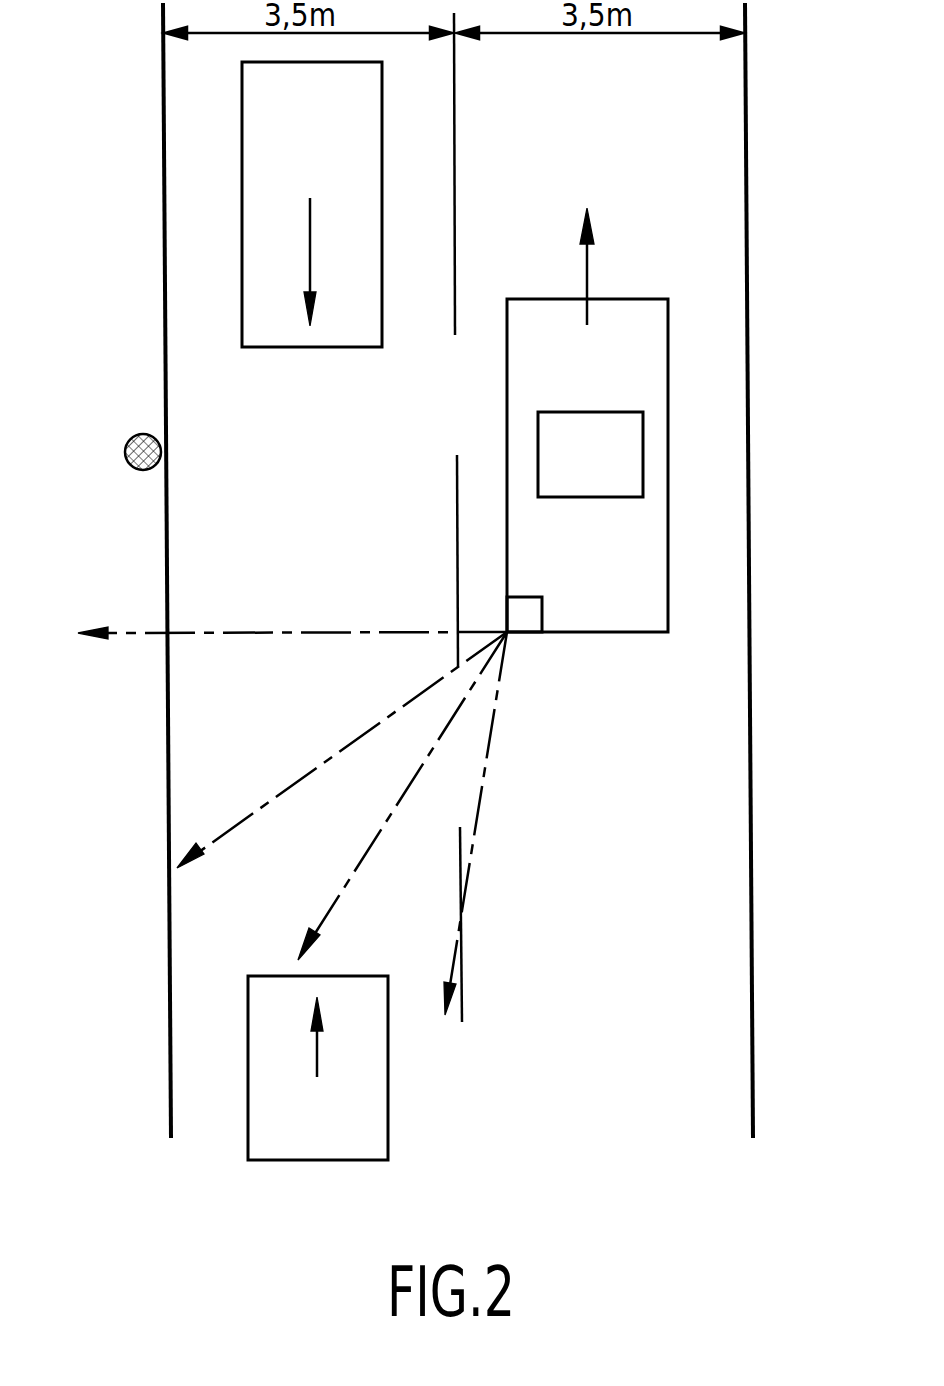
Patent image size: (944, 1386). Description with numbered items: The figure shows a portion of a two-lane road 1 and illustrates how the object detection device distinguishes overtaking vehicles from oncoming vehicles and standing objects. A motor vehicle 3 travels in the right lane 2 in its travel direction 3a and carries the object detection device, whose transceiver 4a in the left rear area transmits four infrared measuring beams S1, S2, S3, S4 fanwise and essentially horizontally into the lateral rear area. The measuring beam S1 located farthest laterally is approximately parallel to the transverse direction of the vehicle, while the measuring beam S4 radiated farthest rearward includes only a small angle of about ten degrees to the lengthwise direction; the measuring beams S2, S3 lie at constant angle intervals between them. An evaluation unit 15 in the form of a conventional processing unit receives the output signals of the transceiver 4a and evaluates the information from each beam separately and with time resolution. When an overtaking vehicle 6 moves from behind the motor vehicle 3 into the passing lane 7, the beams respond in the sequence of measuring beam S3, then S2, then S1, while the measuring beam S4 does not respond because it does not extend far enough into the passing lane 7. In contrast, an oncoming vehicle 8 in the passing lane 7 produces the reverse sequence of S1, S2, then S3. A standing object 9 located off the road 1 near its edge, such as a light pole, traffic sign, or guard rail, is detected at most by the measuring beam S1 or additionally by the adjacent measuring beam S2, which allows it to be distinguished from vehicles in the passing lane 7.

The two-lane road 1 is at (748, 293).
The right lane 2 is at (624, 139).
The motor vehicle 3 is at (669, 527).
The travel direction 3a is at (587, 275).
The transceiver 4a is at (523, 622).
The overtaking vehicle 6 is at (388, 1103).
The passing lane 7 is at (345, 496).
The oncoming vehicle 8 is at (382, 310).
The standing object 9 is at (125, 440).
The evaluation unit 15 is at (643, 450).
The measuring beam S1 is at (305, 632).
The measuring beam S2 is at (410, 702).
The measuring beam S3 is at (450, 730).
The measuring beam S4 is at (485, 782).